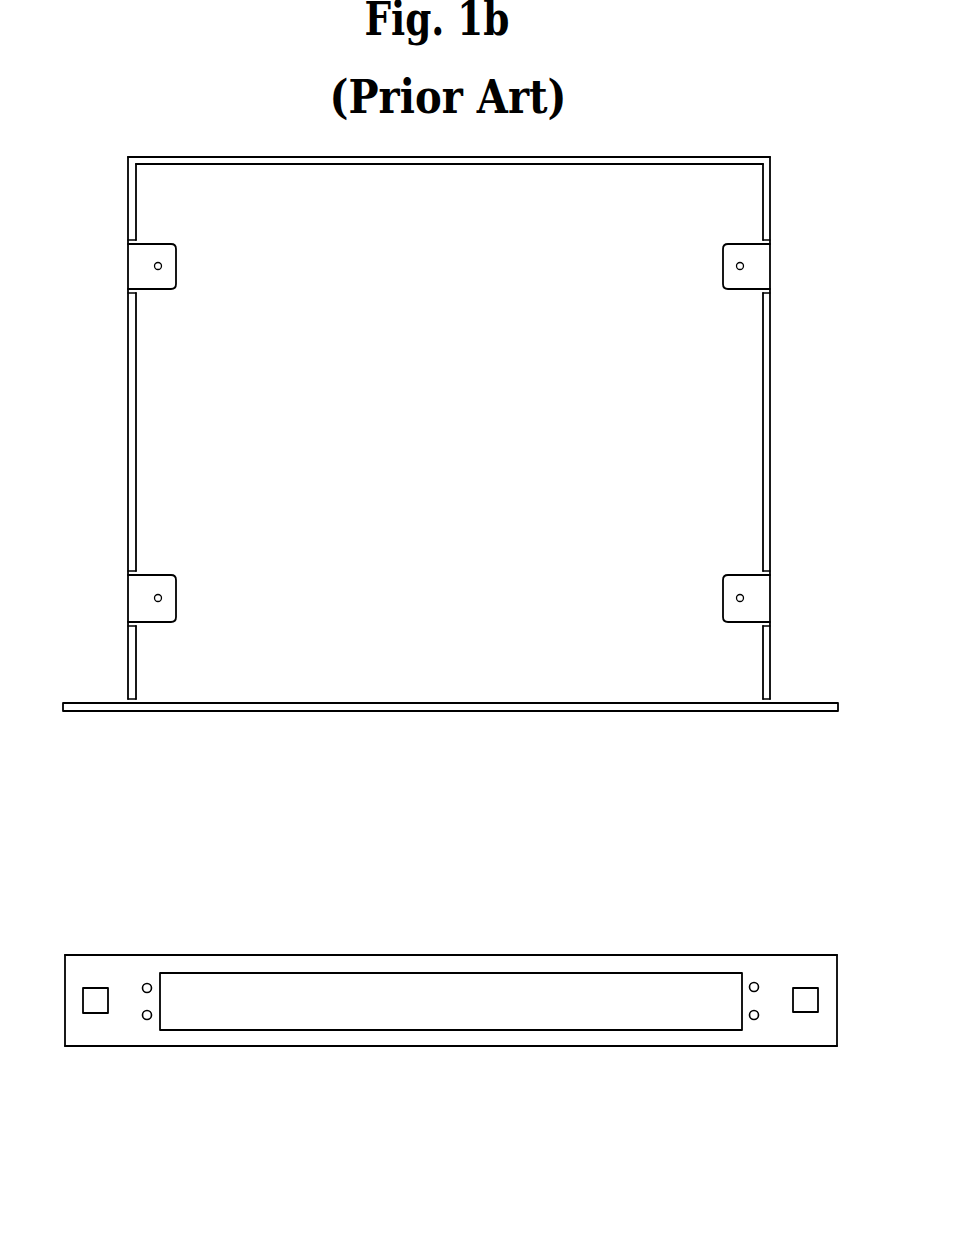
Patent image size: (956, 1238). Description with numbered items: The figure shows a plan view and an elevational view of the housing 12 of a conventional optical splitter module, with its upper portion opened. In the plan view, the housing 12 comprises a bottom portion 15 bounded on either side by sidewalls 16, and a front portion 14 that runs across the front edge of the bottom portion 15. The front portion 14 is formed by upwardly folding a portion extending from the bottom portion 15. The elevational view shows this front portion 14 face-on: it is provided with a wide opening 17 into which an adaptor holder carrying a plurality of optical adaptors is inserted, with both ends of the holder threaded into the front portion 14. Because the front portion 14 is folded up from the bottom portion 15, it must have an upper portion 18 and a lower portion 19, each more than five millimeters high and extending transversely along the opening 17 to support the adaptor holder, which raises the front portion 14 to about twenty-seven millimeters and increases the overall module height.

The housing 12 is at (783, 316).
The front portion 14 is at (515, 712).
The bottom portion 15 is at (469, 431).
The sidewalls 16 is at (128, 405).
The opening 17 is at (553, 987).
The upper portion 18 is at (403, 965).
The lower portion 19 is at (407, 1032).